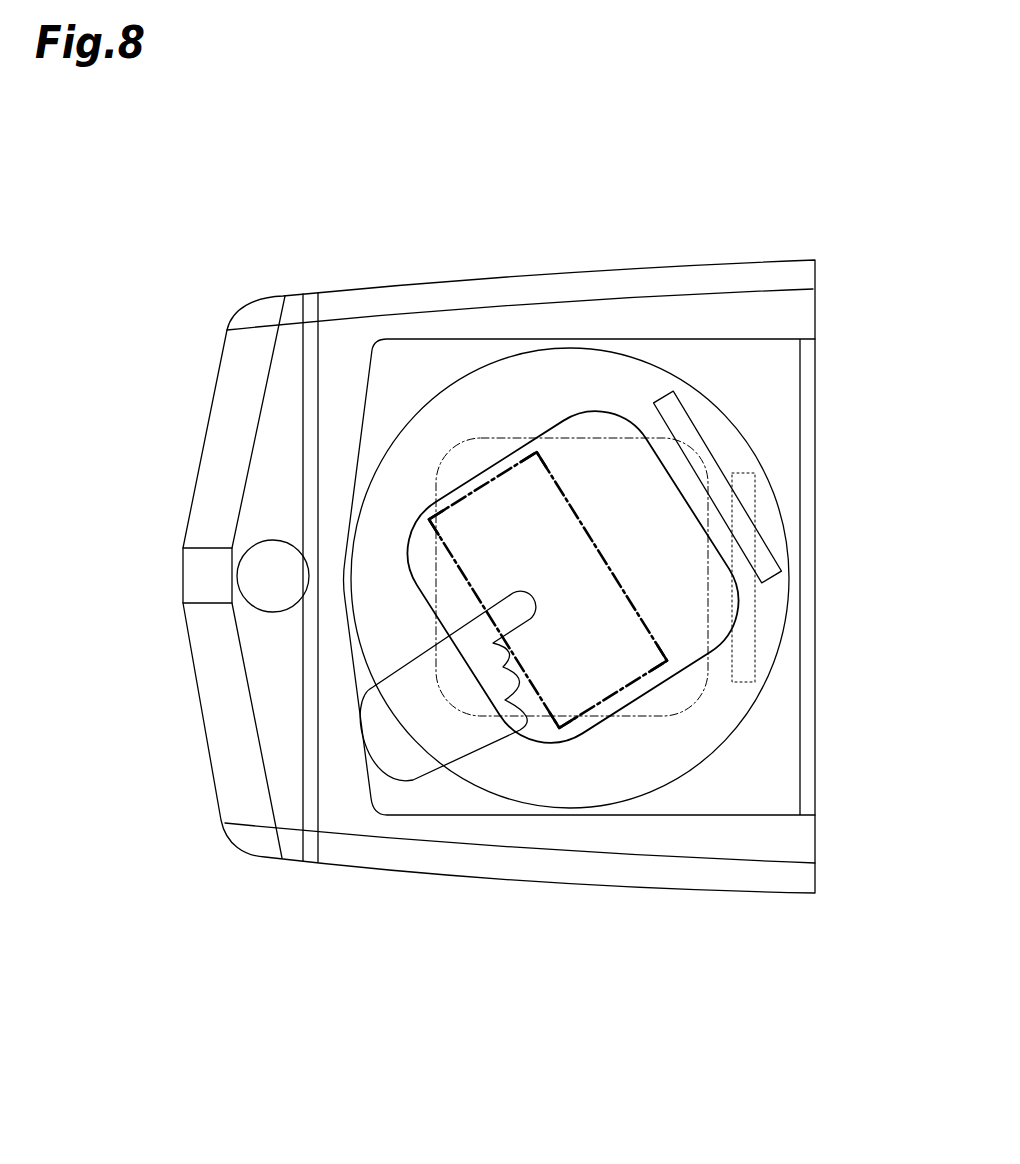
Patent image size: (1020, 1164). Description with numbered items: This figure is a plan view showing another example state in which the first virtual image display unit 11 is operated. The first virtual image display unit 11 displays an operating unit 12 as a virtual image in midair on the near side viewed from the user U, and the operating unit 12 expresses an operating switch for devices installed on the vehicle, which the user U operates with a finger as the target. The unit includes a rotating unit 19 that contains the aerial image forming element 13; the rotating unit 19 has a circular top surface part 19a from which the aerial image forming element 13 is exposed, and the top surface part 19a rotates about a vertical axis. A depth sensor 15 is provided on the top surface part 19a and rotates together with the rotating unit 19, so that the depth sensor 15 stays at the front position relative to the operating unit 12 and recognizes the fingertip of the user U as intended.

The first virtual image display unit 11 is at (688, 143).
The operating unit 12 is at (605, 690).
The aerial image forming element 13 is at (588, 465).
The depth sensor 15 is at (678, 418).
The rotating unit 19 is at (428, 401).
The top surface part 19a is at (533, 383).
The user U is at (520, 607).